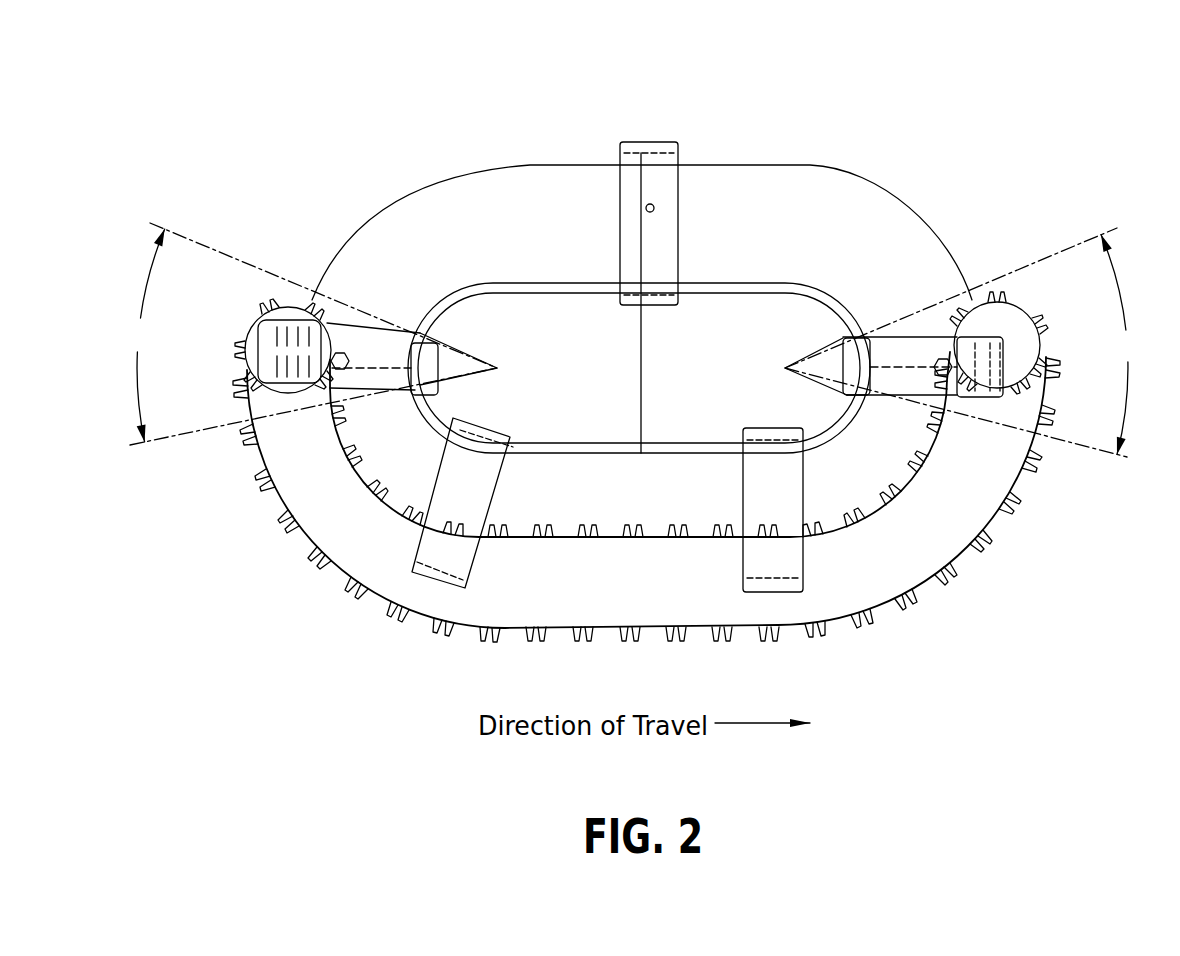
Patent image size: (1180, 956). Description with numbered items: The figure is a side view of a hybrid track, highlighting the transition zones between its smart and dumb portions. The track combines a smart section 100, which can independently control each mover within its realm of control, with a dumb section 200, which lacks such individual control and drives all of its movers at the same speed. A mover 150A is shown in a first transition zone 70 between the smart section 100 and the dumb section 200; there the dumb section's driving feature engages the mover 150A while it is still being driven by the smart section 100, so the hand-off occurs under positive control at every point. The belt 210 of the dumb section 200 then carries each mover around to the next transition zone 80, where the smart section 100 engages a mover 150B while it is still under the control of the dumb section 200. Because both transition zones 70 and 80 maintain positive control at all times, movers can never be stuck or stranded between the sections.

The smart section 100 is at (373, 170).
The mover 150A is at (397, 325).
The mover 150B is at (920, 327).
The dumb section 200 is at (305, 615).
The belt 210 is at (422, 617).
The transition zone 70 is at (313, 334).
The transition zone 80 is at (962, 342).